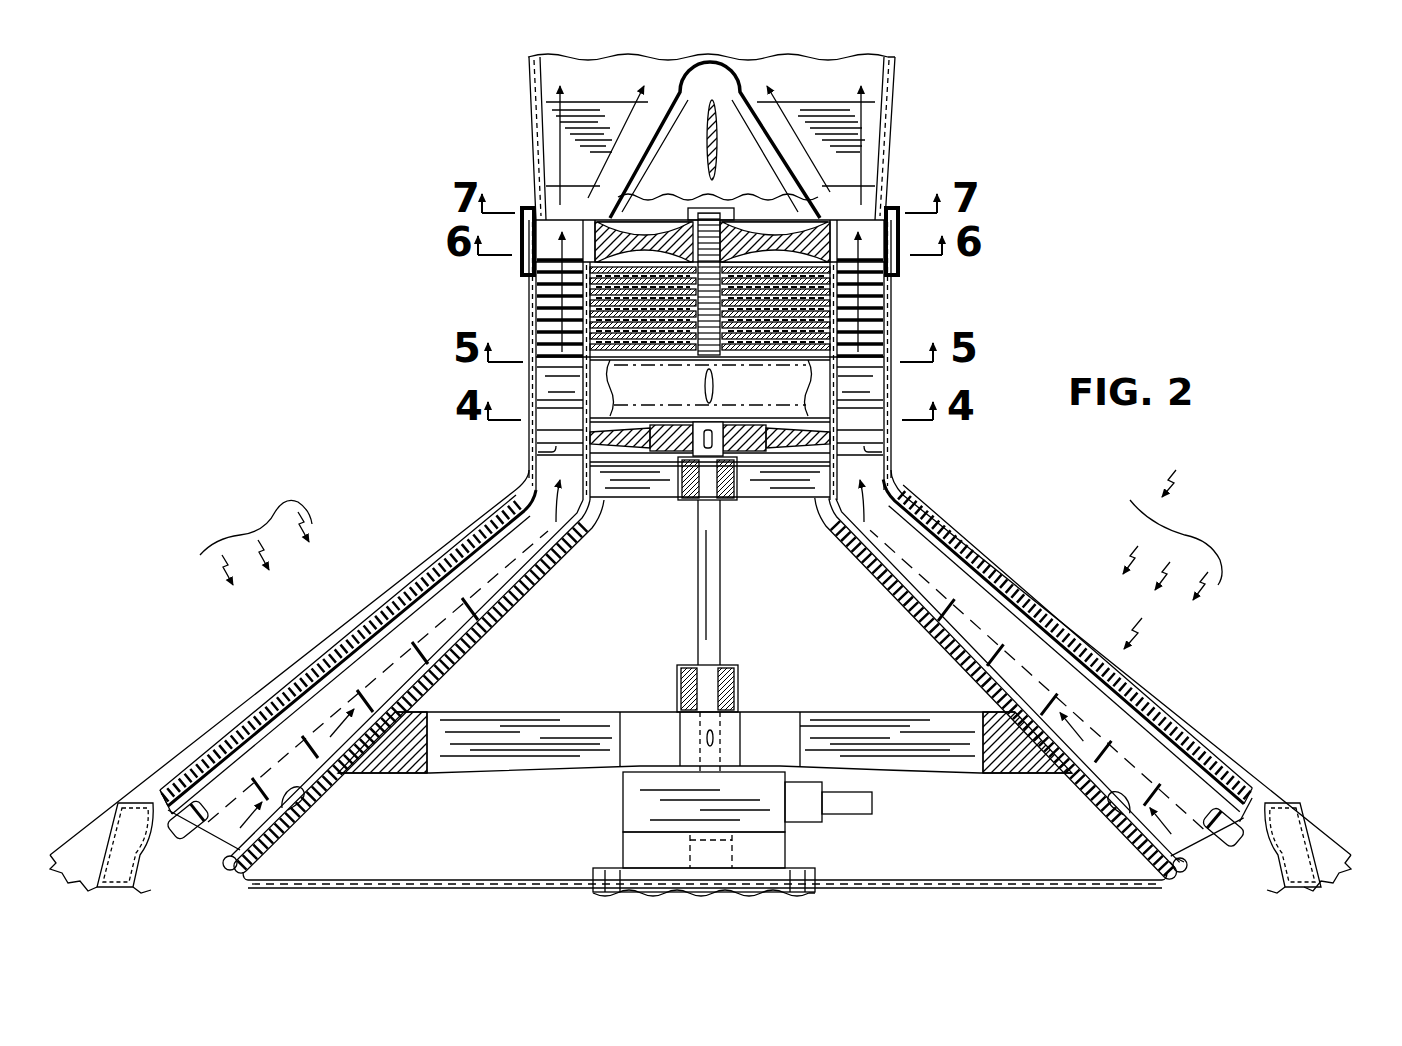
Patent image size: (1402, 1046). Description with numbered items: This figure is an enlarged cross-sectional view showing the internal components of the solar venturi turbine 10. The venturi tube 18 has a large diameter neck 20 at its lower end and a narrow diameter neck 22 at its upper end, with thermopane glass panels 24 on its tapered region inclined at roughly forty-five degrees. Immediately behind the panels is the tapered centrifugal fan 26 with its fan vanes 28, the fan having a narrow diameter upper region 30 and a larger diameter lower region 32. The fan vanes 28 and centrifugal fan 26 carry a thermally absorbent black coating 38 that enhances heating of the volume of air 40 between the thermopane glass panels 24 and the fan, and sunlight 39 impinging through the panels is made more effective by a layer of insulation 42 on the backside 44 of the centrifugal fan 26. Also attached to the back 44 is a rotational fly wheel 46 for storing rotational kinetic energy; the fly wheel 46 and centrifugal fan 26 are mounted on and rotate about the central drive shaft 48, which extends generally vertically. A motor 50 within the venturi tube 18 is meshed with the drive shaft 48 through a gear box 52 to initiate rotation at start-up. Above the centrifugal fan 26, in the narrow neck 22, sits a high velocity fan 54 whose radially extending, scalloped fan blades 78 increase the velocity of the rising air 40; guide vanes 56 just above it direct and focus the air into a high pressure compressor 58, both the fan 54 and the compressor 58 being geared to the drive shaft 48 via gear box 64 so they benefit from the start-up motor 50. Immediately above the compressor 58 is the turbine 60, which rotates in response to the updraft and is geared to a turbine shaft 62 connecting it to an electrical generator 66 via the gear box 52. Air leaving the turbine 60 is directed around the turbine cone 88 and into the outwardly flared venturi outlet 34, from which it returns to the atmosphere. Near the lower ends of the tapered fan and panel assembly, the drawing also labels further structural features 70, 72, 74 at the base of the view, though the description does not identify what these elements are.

The solar venturi turbine 10 is at (1185, 470).
The venturi tube 18 is at (1148, 619).
The large diameter neck 20 is at (1300, 842).
The narrow diameter neck 22 is at (892, 300).
The thermopane glass panels 24 is at (332, 646).
The tapered centrifugal fan 26 is at (246, 878).
The fan vanes 28 is at (180, 829).
The narrow diameter upper region 30 is at (892, 470).
The larger diameter lower region 32 is at (252, 866).
The venturi outlet 34 is at (900, 70).
The thermally absorbent black coating 38 is at (305, 800).
The sunlight 39 is at (711, 538).
The volume of air 40 is at (224, 860).
The layer of insulation 42 is at (478, 630).
The backside of the centrifugal fan 44 is at (335, 800).
The rotational fly wheel 46 is at (560, 738).
The central drive shaft 48 is at (697, 596).
The motor 50 is at (852, 814).
The gear box 52 is at (623, 798).
The high velocity fan 54 is at (884, 432).
The guide vanes 56 is at (556, 384).
The high pressure compressor 58 is at (892, 282).
The turbine 60 is at (815, 238).
The turbine shaft 62 is at (681, 212).
The gear box 64 is at (702, 390).
The electrical generator 66 is at (612, 878).
The shell end 70 is at (186, 790).
The bottom plate 72 is at (398, 880).
The outer wall 74 is at (262, 694).
The fan blades 78 is at (538, 452).
The turbine cone 88 is at (690, 80).